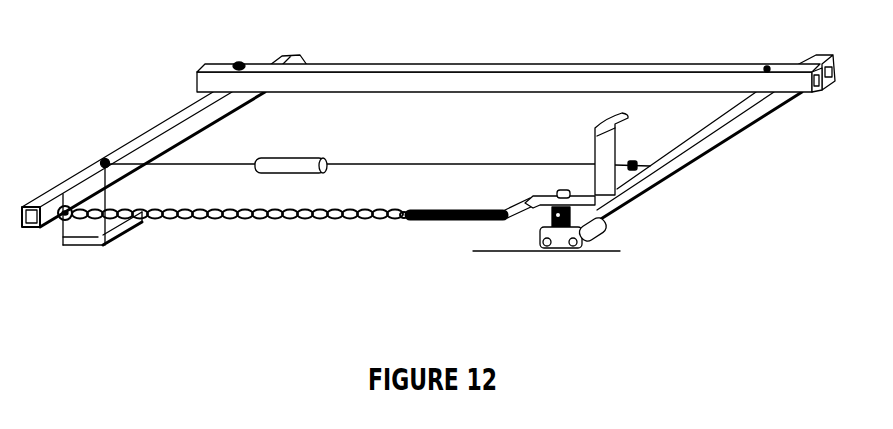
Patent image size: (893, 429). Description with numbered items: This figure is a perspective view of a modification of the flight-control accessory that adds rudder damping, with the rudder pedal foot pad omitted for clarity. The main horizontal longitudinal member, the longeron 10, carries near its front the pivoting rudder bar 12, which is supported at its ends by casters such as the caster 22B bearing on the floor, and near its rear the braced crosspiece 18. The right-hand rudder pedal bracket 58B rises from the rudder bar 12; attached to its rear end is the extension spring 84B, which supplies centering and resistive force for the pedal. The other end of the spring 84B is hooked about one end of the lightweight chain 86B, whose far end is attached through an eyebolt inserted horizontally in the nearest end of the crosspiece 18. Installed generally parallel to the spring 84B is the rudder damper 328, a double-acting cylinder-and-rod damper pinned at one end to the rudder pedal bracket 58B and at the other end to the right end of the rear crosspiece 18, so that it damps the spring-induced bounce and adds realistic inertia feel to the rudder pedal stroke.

The longeron 10 is at (442, 66).
The rudder bar 12 is at (698, 155).
The crosspiece 18 is at (167, 123).
The caster 22B is at (619, 221).
The rudder pedal bracket 58B is at (595, 160).
The extension spring 84B is at (467, 223).
The chain 86B is at (322, 222).
The rudder damper 328 is at (426, 164).